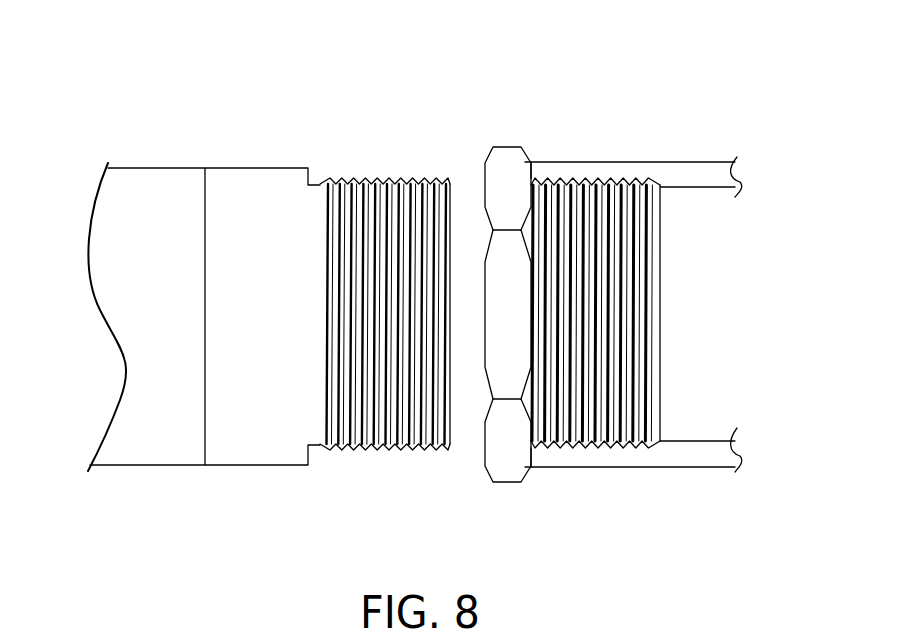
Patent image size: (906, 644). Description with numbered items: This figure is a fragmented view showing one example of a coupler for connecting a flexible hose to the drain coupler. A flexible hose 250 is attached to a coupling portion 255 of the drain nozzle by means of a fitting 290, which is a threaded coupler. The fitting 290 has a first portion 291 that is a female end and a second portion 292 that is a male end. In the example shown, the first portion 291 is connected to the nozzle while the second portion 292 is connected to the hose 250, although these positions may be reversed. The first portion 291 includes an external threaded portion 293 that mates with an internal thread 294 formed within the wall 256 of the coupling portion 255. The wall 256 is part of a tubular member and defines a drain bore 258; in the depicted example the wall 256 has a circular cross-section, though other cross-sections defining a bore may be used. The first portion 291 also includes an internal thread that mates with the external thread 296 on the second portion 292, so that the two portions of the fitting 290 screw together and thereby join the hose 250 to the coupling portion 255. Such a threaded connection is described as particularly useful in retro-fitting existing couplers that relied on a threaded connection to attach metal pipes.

The fitting 290 is at (379, 72).
The flexible hose 250 is at (160, 187).
The second portion 292 is at (346, 177).
The external thread 296 is at (395, 177).
The first portion 291 is at (497, 144).
The external threaded portion 293 is at (546, 456).
The coupling portion 255 is at (565, 162).
The internal thread 294 is at (600, 428).
The wall 256 is at (698, 178).
The drain bore 258 is at (697, 427).